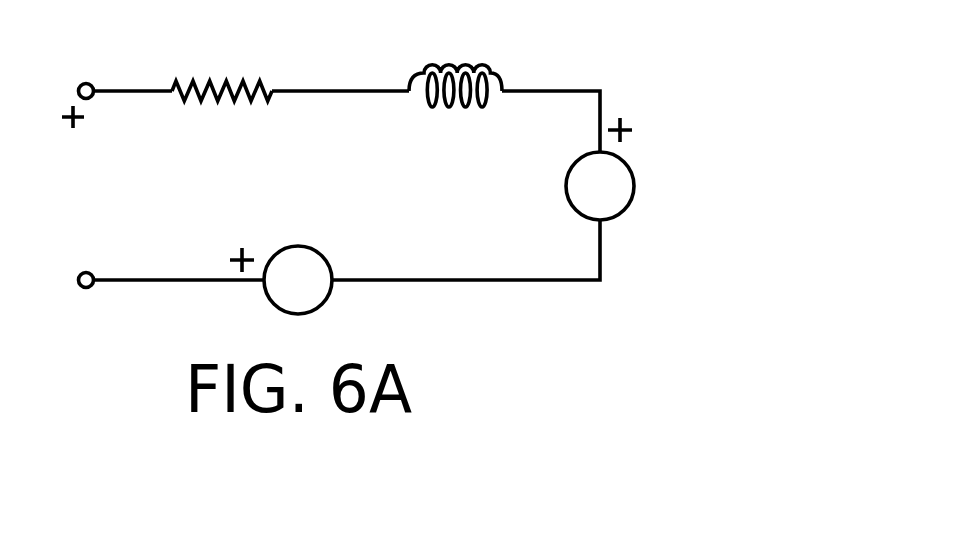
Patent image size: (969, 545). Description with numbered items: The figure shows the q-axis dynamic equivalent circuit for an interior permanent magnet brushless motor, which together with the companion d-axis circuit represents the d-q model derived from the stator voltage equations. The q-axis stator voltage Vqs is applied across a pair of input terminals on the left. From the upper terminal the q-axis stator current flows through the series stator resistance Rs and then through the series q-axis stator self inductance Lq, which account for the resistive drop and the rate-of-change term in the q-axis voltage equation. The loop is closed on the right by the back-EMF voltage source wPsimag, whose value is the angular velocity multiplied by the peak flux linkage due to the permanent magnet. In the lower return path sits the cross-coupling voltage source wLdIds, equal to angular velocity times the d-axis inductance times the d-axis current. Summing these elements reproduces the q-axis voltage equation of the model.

The q-axis stator voltage Vqs is at (161, 186).
The stator resistance Rs is at (272, 91).
The q-axis stator self inductance Lq is at (504, 113).
The back-EMF voltage source ω·ψmag wPsimag is at (597, 199).
The cross-coupling voltage source ω·Ld·Id wLdIds is at (297, 252).